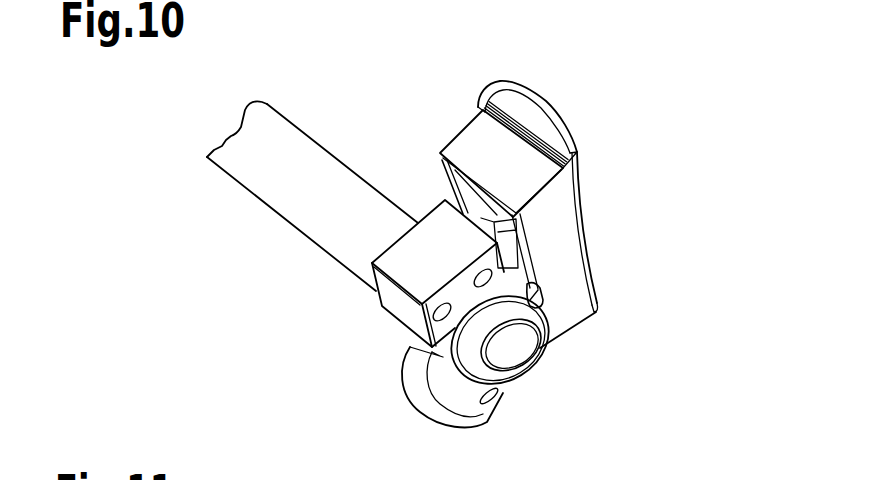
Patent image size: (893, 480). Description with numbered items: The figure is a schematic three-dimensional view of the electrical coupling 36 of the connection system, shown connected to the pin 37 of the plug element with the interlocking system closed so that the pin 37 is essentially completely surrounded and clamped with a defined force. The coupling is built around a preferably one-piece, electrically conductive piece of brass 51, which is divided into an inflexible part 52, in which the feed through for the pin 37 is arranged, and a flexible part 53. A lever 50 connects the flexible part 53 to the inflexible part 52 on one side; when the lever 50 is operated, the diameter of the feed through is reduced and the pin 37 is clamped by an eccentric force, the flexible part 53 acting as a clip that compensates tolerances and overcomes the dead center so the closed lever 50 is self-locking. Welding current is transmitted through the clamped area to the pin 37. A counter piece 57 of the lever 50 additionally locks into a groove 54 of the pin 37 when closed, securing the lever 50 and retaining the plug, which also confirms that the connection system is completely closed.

The electrical coupling 36 is at (650, 115).
The pin 37 is at (333, 183).
The lever 50 is at (558, 227).
The piece of brass 51 is at (355, 367).
The inflexible part 52 is at (392, 297).
The flexible part 53 is at (477, 413).
The groove 54 is at (443, 357).
The counter piece 57 is at (520, 292).